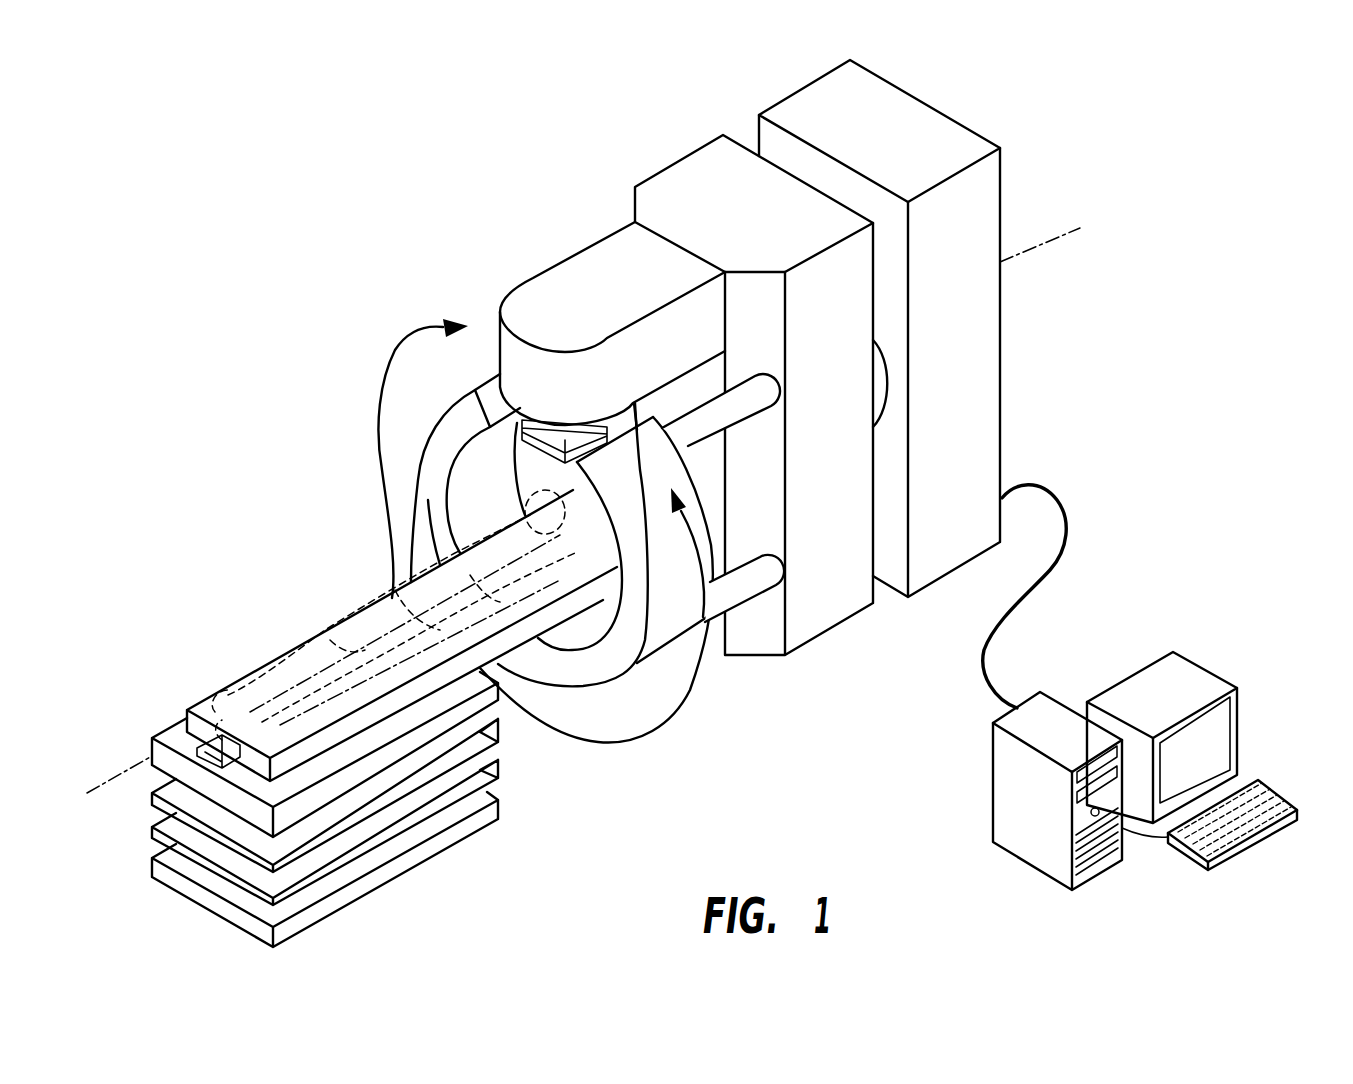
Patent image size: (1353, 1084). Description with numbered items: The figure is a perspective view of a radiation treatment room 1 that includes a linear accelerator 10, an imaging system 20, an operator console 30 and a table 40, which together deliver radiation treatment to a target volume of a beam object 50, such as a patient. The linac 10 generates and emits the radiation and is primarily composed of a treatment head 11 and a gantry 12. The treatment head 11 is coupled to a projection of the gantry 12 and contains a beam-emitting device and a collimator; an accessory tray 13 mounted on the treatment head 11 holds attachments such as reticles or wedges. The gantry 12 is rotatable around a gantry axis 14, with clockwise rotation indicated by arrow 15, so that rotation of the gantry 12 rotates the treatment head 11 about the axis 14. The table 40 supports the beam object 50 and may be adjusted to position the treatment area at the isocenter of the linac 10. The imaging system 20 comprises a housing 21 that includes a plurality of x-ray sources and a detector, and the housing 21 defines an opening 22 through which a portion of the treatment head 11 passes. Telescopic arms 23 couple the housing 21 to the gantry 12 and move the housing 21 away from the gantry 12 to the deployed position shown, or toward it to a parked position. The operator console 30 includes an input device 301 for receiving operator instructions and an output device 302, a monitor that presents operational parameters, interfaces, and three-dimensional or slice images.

The radiation treatment room 1 is at (246, 516).
The linear accelerator 10 is at (467, 277).
The treatment head 11 is at (533, 272).
The gantry 12 is at (657, 173).
The accessory tray 13 is at (528, 466).
The gantry axis 14 is at (132, 768).
The arrow 15 is at (378, 415).
The imaging system 20 is at (655, 677).
The housing 21 is at (567, 662).
The opening 22 is at (492, 393).
The telescopic arms 23 is at (745, 403).
The operator console 30 is at (1127, 601).
The table 40 is at (205, 715).
The beam object 50 is at (383, 574).
The input device 301 is at (1267, 790).
The output device 302 is at (1197, 683).